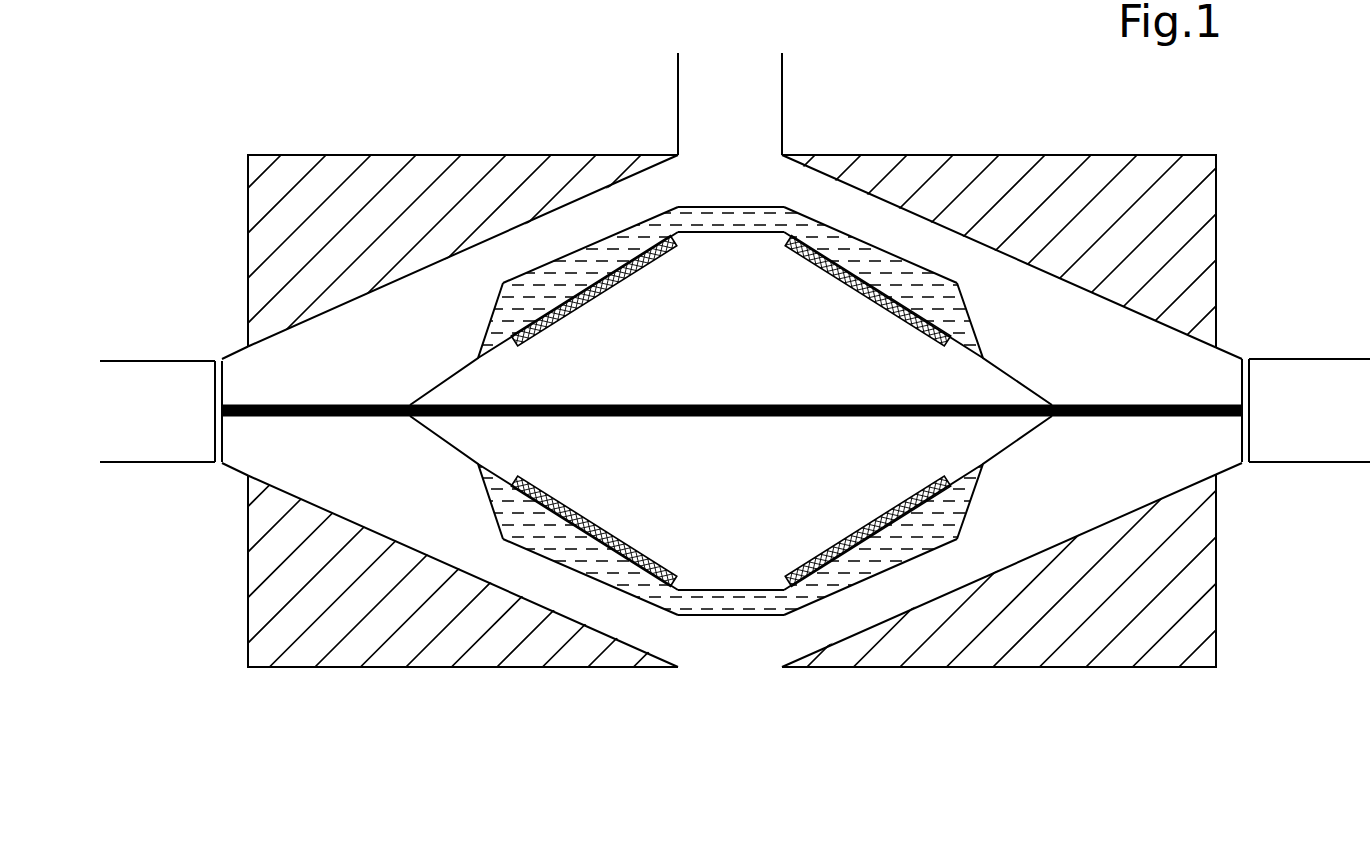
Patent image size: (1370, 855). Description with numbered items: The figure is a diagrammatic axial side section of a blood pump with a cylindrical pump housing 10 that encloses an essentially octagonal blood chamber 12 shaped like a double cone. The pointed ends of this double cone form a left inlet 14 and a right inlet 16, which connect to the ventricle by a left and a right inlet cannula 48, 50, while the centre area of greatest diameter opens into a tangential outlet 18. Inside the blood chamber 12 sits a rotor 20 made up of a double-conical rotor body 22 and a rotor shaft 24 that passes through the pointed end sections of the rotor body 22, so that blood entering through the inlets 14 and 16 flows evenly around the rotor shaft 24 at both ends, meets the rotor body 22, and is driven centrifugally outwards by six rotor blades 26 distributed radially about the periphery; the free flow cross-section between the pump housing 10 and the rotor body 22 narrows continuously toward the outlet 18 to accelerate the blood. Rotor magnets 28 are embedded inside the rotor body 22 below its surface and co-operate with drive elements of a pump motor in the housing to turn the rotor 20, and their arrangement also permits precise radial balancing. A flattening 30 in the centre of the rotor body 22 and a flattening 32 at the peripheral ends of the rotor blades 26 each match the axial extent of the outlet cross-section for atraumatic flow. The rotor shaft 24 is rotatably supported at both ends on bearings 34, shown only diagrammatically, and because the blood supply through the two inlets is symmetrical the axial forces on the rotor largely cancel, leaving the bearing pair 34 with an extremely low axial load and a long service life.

The pump housing 10 is at (466, 146).
The blood chamber 12 is at (398, 318).
The left inlet 14 is at (255, 364).
The right inlet 16 is at (1207, 366).
The outlet 18 is at (720, 130).
The rotor 20 is at (751, 467).
The rotor body 22 is at (998, 433).
The rotor shaft 24 is at (334, 405).
The rotor blades 26 is at (857, 247).
The rotor magnets 28 is at (600, 300).
The flattening 30 is at (725, 236).
The flattening 32 is at (712, 206).
The bearings 34 is at (217, 463).
The left inlet cannula 48 is at (152, 434).
The right inlet cannula 50 is at (1349, 434).